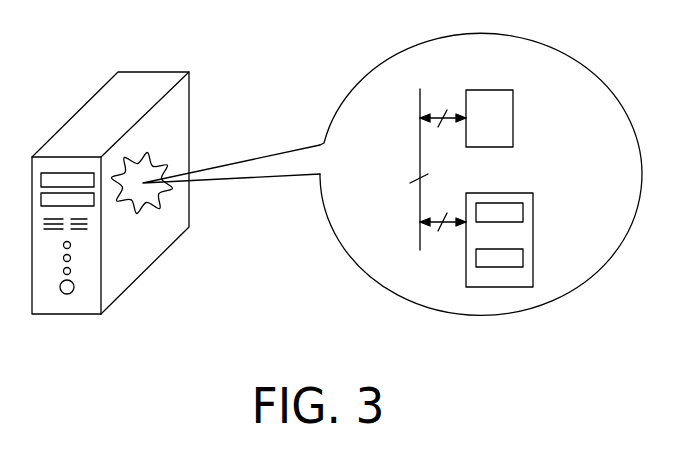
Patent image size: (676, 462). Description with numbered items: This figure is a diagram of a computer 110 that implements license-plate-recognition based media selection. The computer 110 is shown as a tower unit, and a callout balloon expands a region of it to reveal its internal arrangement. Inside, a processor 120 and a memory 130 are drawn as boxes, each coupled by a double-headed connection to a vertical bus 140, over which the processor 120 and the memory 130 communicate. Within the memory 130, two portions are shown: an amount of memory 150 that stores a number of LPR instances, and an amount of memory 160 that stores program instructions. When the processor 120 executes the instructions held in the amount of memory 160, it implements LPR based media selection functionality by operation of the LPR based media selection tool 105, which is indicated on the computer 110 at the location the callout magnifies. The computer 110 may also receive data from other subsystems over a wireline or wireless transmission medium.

The computer 110 is at (111, 79).
The LPR based media selection tool 105 is at (163, 206).
The bus 140 is at (420, 147).
The processor 120 is at (513, 118).
The memory 130 is at (466, 268).
The amount of memory 150 is at (523, 212).
The amount of memory 160 is at (523, 258).